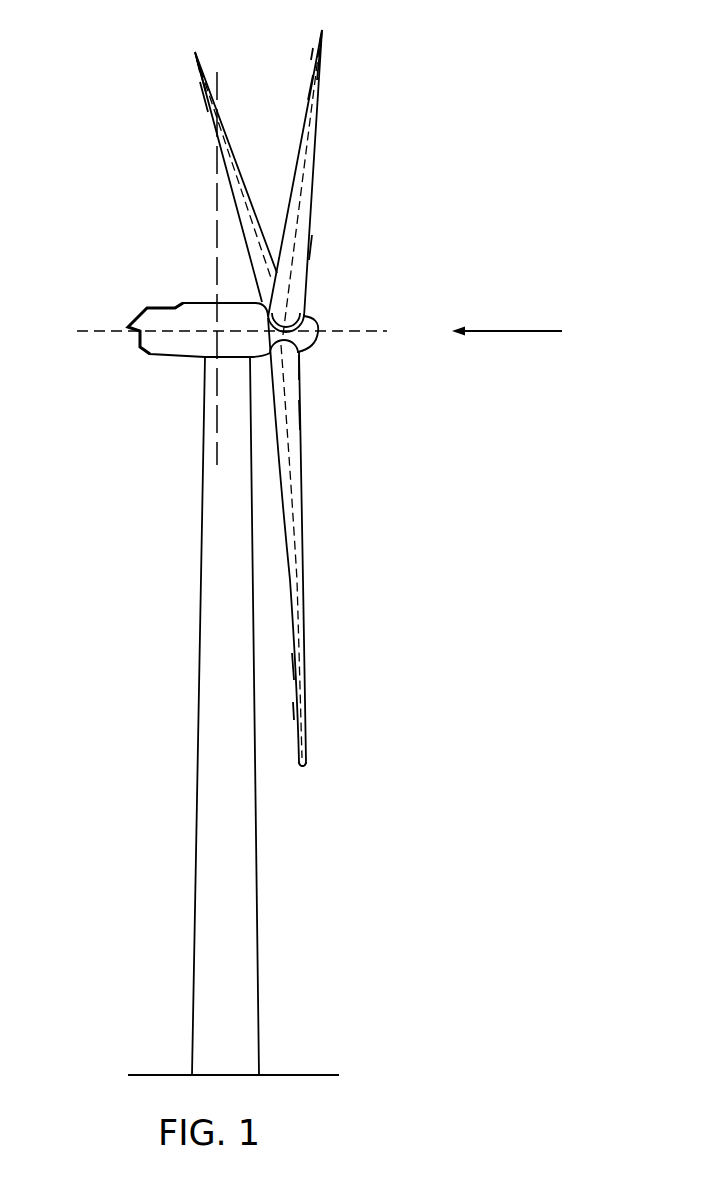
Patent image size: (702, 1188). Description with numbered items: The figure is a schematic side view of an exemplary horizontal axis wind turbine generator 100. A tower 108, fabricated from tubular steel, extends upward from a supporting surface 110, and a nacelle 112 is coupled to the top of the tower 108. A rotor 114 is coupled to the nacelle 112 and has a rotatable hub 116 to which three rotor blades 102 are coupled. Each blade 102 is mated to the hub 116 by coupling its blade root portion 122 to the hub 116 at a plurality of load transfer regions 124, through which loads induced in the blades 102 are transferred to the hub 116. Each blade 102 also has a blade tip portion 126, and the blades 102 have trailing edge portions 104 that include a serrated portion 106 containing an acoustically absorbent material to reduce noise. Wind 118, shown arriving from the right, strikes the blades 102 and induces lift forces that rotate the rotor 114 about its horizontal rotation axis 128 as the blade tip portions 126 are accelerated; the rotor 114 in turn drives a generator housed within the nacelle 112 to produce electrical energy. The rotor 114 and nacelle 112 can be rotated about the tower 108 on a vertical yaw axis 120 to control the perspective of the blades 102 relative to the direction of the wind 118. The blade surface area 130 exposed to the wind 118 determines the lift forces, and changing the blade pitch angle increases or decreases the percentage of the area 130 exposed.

The wind turbine generator 100 is at (146, 237).
The rotor blades 102 is at (214, 114).
The trailing edge portions 104 is at (198, 81).
The serrated portion 106 is at (195, 58).
The tower 108 is at (220, 586).
The supporting surface 110 is at (163, 1075).
The nacelle 112 is at (172, 360).
The rotor 114 is at (320, 274).
The rotatable hub 116 is at (313, 318).
The wind 118 is at (517, 331).
The yaw axis 120 is at (214, 183).
The blade root portion 122 is at (301, 413).
The load transfer regions 124 is at (300, 365).
The blade tip portion 126 is at (221, 120).
The rotation axis 128 is at (372, 335).
The blade surface area 130 is at (309, 252).